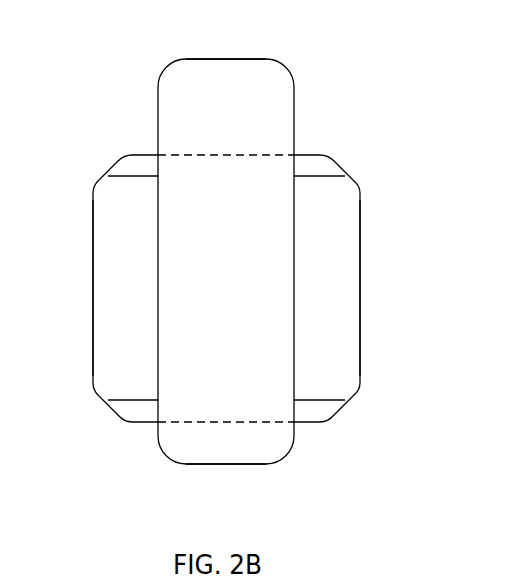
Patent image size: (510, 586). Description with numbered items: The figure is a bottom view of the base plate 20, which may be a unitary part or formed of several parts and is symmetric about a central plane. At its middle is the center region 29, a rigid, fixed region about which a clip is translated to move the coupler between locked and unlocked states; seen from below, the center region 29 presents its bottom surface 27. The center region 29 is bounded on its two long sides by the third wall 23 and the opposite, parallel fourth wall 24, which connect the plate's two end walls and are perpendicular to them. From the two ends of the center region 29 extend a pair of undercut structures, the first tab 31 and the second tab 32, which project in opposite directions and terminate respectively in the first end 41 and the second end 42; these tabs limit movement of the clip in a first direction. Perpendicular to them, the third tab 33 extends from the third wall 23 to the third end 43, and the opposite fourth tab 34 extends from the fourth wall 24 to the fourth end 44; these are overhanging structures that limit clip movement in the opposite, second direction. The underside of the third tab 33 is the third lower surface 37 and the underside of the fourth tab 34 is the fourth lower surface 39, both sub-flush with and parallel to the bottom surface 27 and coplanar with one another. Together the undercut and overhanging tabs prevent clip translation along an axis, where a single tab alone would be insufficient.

The base plate 20 is at (73, 86).
The third wall 23 is at (301, 213).
The fourth wall 24 is at (152, 353).
The bottom surface 27 is at (241, 335).
The center region 29 is at (190, 185).
The first tab 31 is at (280, 62).
The second tab 32 is at (283, 453).
The third tab 33 is at (360, 281).
The fourth tab 34 is at (93, 280).
The third lower surface 37 is at (335, 255).
The fourth lower surface 39 is at (138, 253).
The first end 41 is at (228, 56).
The second end 42 is at (232, 467).
The third end 43 is at (365, 355).
The fourth end 44 is at (89, 242).